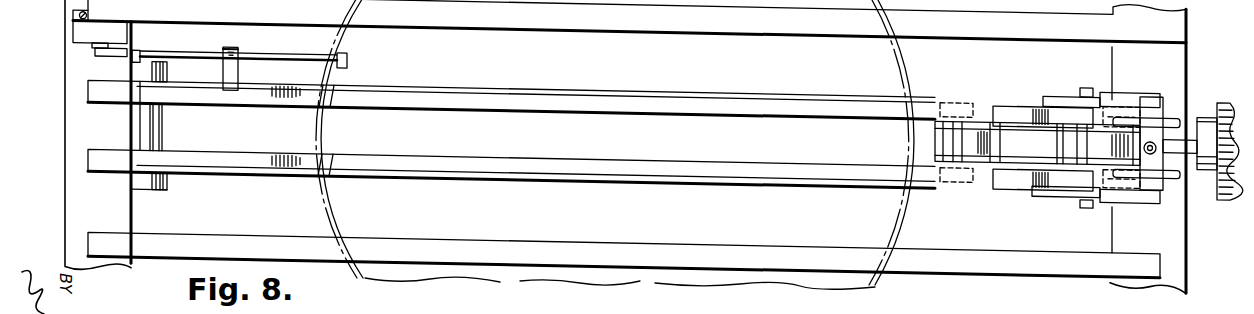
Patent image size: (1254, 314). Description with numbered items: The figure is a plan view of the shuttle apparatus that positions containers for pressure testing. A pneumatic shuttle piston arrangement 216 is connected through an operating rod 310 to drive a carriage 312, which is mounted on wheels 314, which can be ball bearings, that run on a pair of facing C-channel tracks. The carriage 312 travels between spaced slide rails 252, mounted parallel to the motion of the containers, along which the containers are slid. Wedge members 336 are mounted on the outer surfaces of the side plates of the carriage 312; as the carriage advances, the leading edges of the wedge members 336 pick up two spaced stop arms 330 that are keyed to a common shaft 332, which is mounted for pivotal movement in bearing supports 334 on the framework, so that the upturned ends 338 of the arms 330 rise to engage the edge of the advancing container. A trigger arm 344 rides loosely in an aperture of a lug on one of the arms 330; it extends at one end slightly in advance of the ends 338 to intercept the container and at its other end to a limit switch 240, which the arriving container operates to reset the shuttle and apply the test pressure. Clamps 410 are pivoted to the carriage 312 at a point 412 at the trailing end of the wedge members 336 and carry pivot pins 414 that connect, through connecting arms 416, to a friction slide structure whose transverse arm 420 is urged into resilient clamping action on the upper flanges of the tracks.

The limit switch 240 is at (135, 45).
The trigger arm 344 is at (193, 62).
The bearing supports 334 is at (163, 81).
The common shaft 332 is at (160, 136).
The stop arms 330 is at (267, 115).
The upturned ends 338 is at (320, 121).
The slide rails 252 is at (203, 248).
The wheels 314 is at (945, 94).
The carriage 312 is at (982, 111).
The wedge members 336 is at (1027, 99).
The clamps 410 is at (1052, 88).
The pivot pins 414 is at (1085, 81).
The pivot point 412 is at (1095, 90).
The connecting arms 416 is at (1127, 87).
The transverse arm 420 is at (1167, 179).
The shuttle piston arrangement 216 is at (1217, 188).
The operating rod 310 is at (1193, 98).